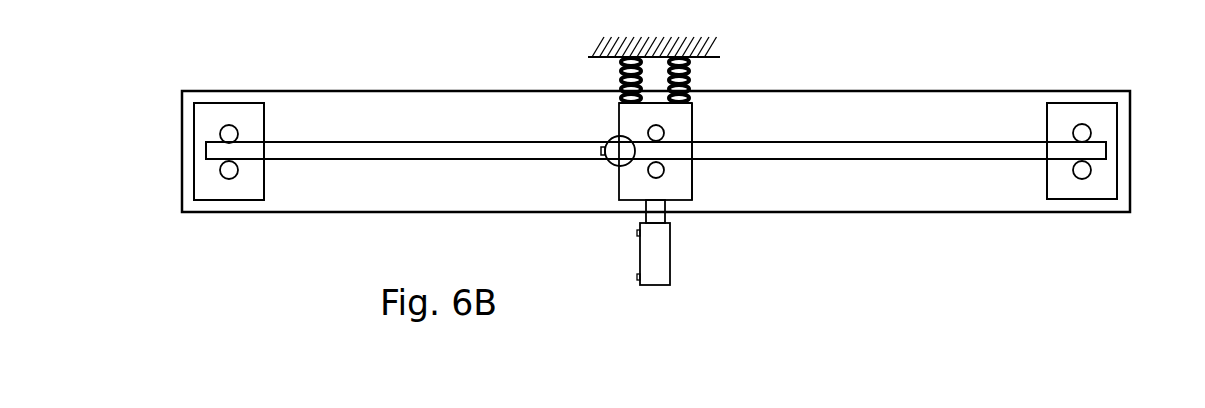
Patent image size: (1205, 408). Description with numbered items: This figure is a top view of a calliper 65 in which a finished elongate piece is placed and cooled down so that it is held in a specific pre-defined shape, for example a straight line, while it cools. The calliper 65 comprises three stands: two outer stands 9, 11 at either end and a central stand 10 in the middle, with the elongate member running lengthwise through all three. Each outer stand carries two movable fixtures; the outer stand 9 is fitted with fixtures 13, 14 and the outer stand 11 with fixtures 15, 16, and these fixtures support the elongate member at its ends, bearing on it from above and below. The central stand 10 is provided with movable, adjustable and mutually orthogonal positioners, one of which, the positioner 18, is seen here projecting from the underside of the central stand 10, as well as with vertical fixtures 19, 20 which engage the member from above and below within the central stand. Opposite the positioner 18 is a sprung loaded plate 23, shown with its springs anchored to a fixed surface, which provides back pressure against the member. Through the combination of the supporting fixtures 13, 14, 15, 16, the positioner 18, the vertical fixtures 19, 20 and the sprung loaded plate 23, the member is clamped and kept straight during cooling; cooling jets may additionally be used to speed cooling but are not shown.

The outer stand 9 is at (213, 180).
The central stand 10 is at (633, 177).
The outer stand 11 is at (1098, 123).
The movable fixture 13 is at (231, 129).
The movable fixture 14 is at (232, 173).
The movable fixture 15 is at (1080, 129).
The movable fixture 16 is at (1081, 168).
The positioner 18 is at (657, 242).
The vertical fixture 19 is at (660, 173).
The vertical fixture 20 is at (657, 137).
The sprung loaded plate 23 is at (677, 132).
The calliper 65 is at (656, 114).